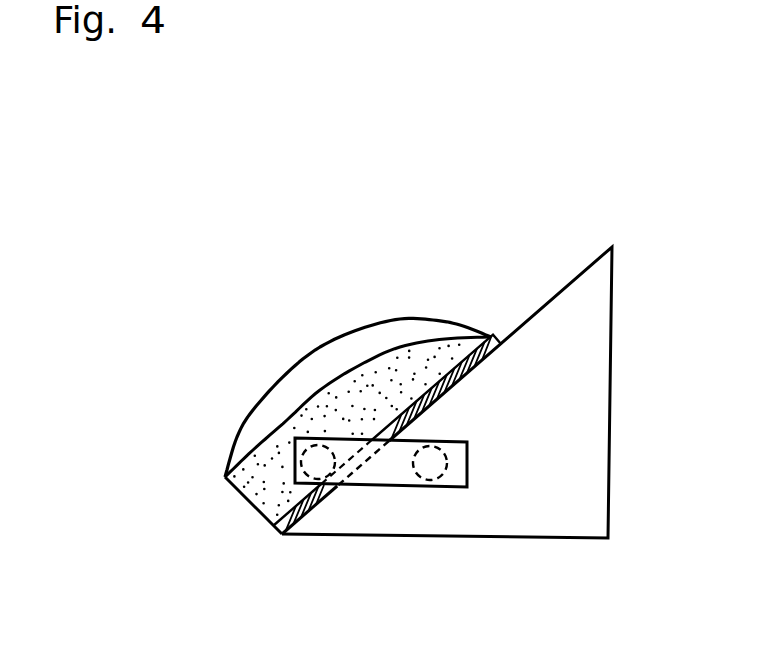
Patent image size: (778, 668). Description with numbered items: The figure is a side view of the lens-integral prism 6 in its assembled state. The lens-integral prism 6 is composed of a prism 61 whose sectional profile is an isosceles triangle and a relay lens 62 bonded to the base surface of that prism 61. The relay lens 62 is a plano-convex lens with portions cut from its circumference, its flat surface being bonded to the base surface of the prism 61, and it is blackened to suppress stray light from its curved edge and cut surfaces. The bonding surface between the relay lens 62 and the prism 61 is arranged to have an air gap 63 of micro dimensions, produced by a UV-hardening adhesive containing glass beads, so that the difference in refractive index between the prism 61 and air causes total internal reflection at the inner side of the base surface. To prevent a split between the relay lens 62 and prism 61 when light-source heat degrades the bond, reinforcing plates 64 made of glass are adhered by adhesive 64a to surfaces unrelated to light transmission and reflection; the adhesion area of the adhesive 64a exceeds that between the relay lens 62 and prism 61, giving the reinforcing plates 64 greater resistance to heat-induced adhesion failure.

The lens-integral prism 6 is at (577, 231).
The prism 61 is at (500, 515).
The relay lens 62 is at (252, 425).
The air gap 63 is at (407, 420).
The reinforcing plates 64 is at (372, 486).
The adhesive 64a is at (440, 466).